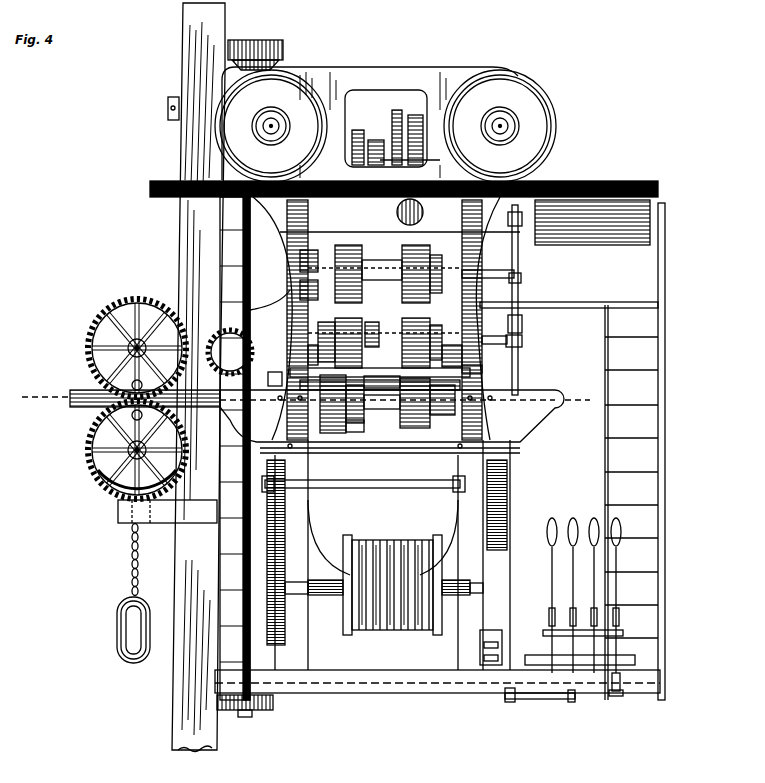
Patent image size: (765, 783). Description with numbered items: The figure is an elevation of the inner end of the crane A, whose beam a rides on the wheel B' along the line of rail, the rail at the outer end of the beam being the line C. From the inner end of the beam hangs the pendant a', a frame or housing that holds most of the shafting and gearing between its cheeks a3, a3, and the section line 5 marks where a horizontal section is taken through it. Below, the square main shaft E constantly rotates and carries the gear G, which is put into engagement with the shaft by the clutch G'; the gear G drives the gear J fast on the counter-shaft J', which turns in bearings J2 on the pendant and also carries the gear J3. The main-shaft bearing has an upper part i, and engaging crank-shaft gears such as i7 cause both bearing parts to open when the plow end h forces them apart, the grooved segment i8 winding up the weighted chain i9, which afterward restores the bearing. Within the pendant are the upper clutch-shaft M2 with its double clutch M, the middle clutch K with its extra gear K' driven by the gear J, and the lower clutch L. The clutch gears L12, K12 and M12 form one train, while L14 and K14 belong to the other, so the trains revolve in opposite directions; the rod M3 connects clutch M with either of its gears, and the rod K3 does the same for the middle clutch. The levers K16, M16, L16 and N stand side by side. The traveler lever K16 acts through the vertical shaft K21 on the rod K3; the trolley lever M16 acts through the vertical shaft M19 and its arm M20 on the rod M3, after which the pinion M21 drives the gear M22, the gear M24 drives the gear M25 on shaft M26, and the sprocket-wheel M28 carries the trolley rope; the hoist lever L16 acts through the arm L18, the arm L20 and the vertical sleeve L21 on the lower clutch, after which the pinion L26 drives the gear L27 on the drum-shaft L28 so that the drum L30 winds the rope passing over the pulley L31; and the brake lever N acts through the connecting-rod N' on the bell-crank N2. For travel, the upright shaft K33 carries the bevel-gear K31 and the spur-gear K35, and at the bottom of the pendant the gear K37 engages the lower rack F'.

The crane A is at (370, 112).
The beam a is at (410, 119).
The wheel B' is at (385, 126).
The spur-gear K35 is at (300, 32).
The bevel-gear K31 is at (272, 66).
The sprocket-wheel M28 is at (360, 138).
The shaft M26 is at (376, 145).
The pulley L31 is at (396, 130).
The gear M25 is at (419, 132).
The gear M24 is at (424, 210).
The lower rack F' is at (437, 687).
The line of rail C is at (386, 318).
The upper clutch-shaft M2 is at (342, 269).
The upper clutch M is at (396, 274).
The gear M12 is at (445, 250).
The gear K' is at (324, 331).
The middle clutch K is at (382, 340).
The gear K12 is at (370, 322).
The gear K14 is at (444, 334).
The pinion M21 is at (300, 280).
The gear M22 is at (300, 255).
The upright shaft K33 is at (270, 300).
The rod M3 is at (488, 275).
The vertical shaft M19 is at (524, 300).
The arm M20 is at (521, 278).
The vertical shaft K21 is at (532, 350).
The rod K3 is at (494, 347).
The gear J3 is at (468, 352).
The bearings J2 is at (393, 358).
The counter-shaft J' is at (380, 368).
The gear J is at (380, 374).
The bell-crank N2 is at (268, 378).
The gear G is at (387, 404).
The clutch G' is at (348, 412).
The lower clutch L is at (382, 383).
The gear L12 is at (364, 430).
The main shaft E is at (144, 392).
The plow end h is at (384, 416).
The section line 5 is at (304, 399).
The upper bearing part i is at (131, 348).
The gear i7 is at (92, 437).
The grooved segment i8 is at (100, 478).
The weighted chain i9 is at (132, 566).
The pendant a' is at (379, 555).
The cheeks a3 is at (322, 510).
The gear L27 is at (285, 630).
The vertical sleeve L21 is at (510, 590).
The gear L14 is at (363, 476).
The drum L30 is at (392, 589).
The pinion L26 is at (318, 600).
The drum-shaft L28 is at (482, 600).
The arm L20 is at (491, 640).
The hoist lever L16 is at (548, 595).
The trolley lever M16 is at (569, 595).
The traveler lever K16 is at (591, 595).
The brake lever N is at (583, 595).
The connecting-rod N' is at (620, 694).
The gear K37 is at (273, 702).
The arm L18 is at (525, 700).